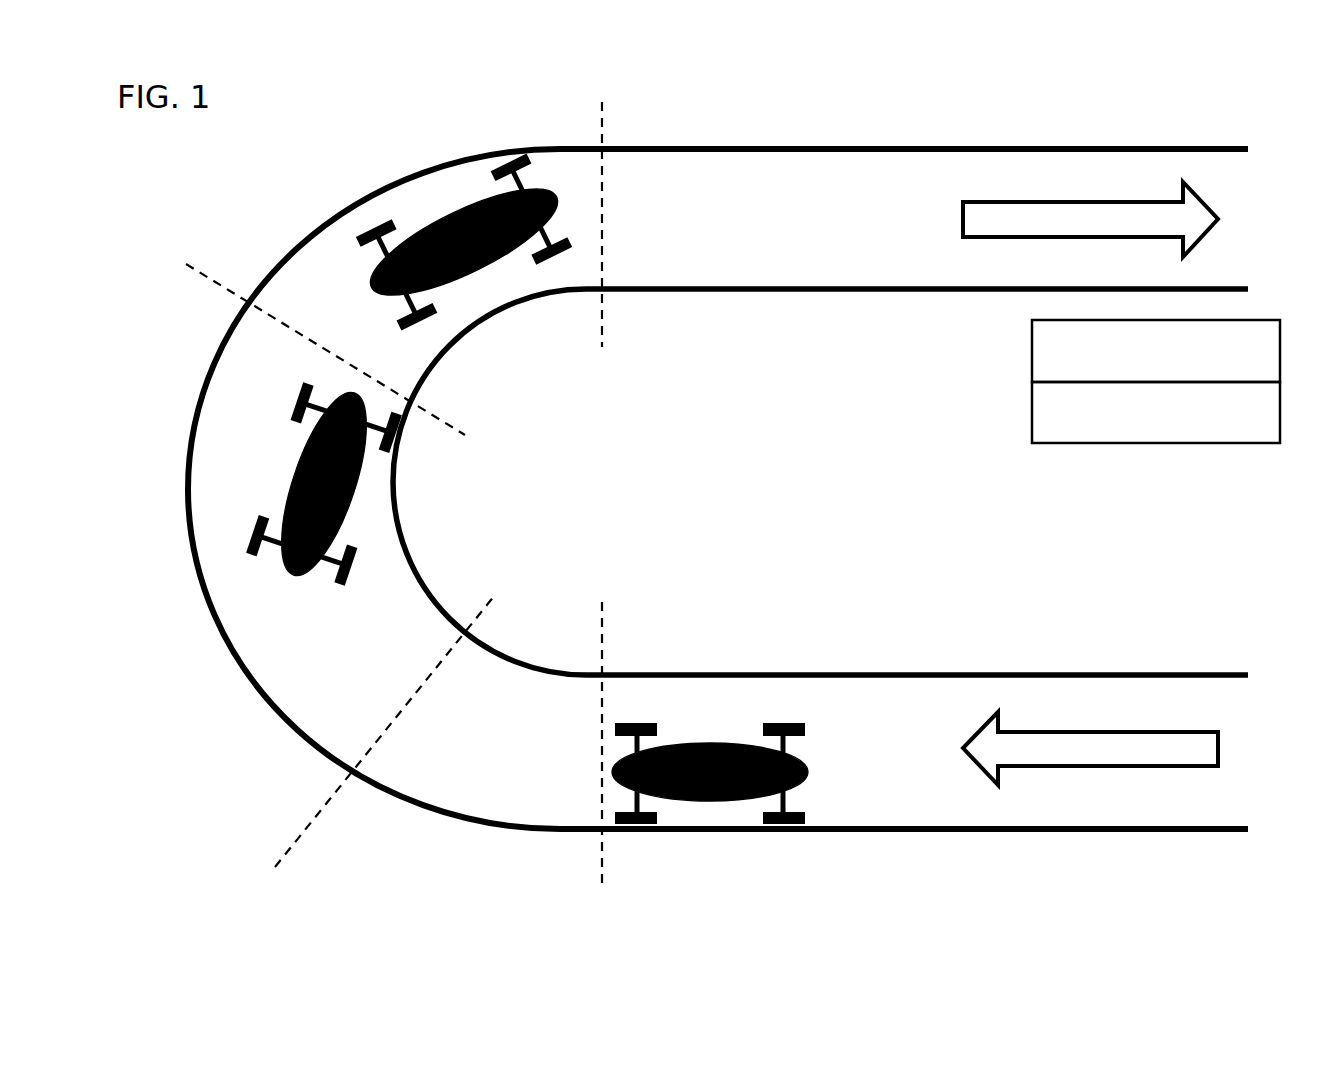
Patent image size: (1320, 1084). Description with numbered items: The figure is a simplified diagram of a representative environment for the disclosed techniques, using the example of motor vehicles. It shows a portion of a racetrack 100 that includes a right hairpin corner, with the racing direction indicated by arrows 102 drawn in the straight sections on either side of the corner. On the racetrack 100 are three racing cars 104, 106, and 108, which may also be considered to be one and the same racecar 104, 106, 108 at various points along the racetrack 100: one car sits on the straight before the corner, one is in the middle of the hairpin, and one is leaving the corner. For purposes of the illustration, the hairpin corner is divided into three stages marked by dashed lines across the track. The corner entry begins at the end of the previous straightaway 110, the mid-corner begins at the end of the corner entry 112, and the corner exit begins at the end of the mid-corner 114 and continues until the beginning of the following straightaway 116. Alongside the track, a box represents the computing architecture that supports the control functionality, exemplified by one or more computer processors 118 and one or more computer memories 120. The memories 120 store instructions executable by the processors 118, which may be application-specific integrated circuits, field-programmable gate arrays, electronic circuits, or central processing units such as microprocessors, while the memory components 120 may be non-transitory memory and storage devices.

The racetrack 100 is at (973, 147).
The arrows 102 is at (984, 258).
The racing car 104 is at (668, 742).
The racing car 106 is at (355, 492).
The racing car 108 is at (563, 230).
The end of the previous straightaway 110 is at (598, 762).
The end of the corner entry 112 is at (366, 752).
The end of the mid-corner 114 is at (307, 333).
The beginning of the following straightaway 116 is at (616, 213).
The computer processor 118 is at (1104, 371).
The computer memory 120 is at (1104, 431).